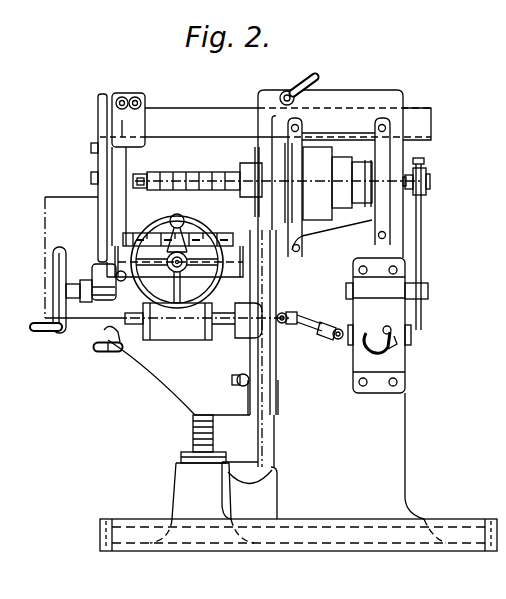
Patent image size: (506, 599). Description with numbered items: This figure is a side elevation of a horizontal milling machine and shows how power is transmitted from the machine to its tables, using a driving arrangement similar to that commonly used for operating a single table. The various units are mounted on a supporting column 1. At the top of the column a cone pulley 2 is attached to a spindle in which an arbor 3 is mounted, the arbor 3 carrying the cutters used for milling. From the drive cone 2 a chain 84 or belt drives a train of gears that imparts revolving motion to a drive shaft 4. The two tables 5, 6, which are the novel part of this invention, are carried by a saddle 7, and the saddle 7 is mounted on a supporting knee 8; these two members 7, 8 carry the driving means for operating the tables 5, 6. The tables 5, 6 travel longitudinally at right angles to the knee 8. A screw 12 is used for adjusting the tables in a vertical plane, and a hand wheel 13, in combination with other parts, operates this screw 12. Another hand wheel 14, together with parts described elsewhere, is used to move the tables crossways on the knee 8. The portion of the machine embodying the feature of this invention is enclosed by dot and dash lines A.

The supporting column 1 is at (405, 450).
The cone pulley 2 is at (341, 158).
The arbor 3 is at (200, 178).
The drive shaft 4 is at (337, 333).
The table 5 is at (135, 237).
The table 6 is at (229, 240).
The saddle 7 is at (120, 287).
The supporting knee 8 is at (153, 371).
The screw 12 is at (192, 432).
The hand wheel 13 is at (112, 348).
The hand wheel 14 is at (61, 333).
The chain 84 is at (421, 230).
The dot and dash lines A is at (63, 195).